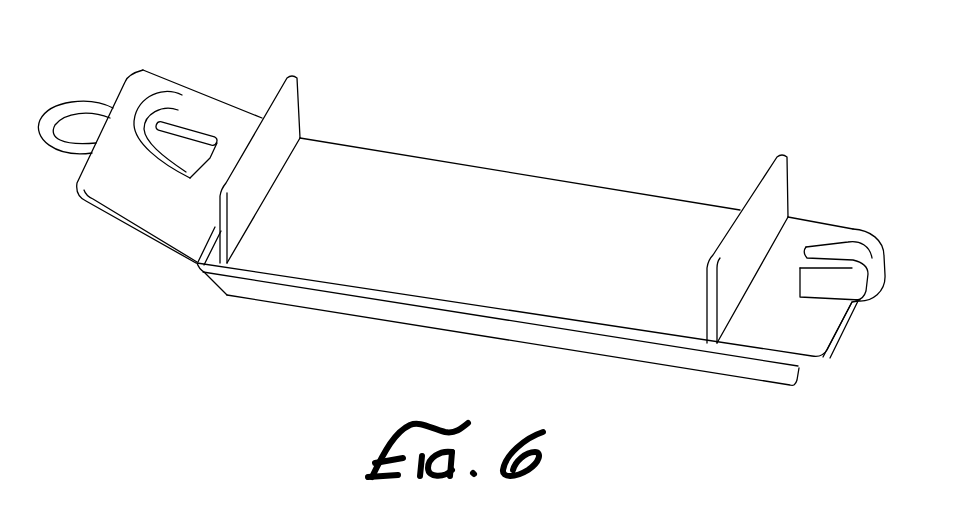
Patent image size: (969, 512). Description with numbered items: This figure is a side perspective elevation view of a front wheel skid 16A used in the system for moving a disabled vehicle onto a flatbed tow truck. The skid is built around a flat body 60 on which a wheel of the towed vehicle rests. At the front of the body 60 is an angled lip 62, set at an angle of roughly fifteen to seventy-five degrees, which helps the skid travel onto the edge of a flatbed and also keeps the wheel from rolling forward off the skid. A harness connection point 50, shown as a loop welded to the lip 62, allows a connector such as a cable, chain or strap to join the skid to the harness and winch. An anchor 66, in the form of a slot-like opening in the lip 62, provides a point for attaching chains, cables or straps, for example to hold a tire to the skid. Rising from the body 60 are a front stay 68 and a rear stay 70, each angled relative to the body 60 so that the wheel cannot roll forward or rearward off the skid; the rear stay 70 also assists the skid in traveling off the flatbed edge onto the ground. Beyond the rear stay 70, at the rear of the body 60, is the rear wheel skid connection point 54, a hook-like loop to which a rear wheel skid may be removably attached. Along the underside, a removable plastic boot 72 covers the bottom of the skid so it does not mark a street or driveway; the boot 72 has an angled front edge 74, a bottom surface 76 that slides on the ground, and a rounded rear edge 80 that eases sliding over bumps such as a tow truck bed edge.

The front wheel skid 16A is at (557, 144).
The harness connection point 50 is at (69, 113).
The rear wheel skid connection point 54 is at (852, 247).
The body 60 is at (422, 197).
The angled lip 62 is at (152, 193).
The anchor 66 is at (178, 110).
The front stay 68 is at (287, 120).
The rear stay 70 is at (753, 177).
The removable plastic boot 72 is at (640, 355).
The front edge 74 is at (214, 283).
The bottom surface 76 is at (318, 313).
The rounded rear edge 80 is at (798, 380).